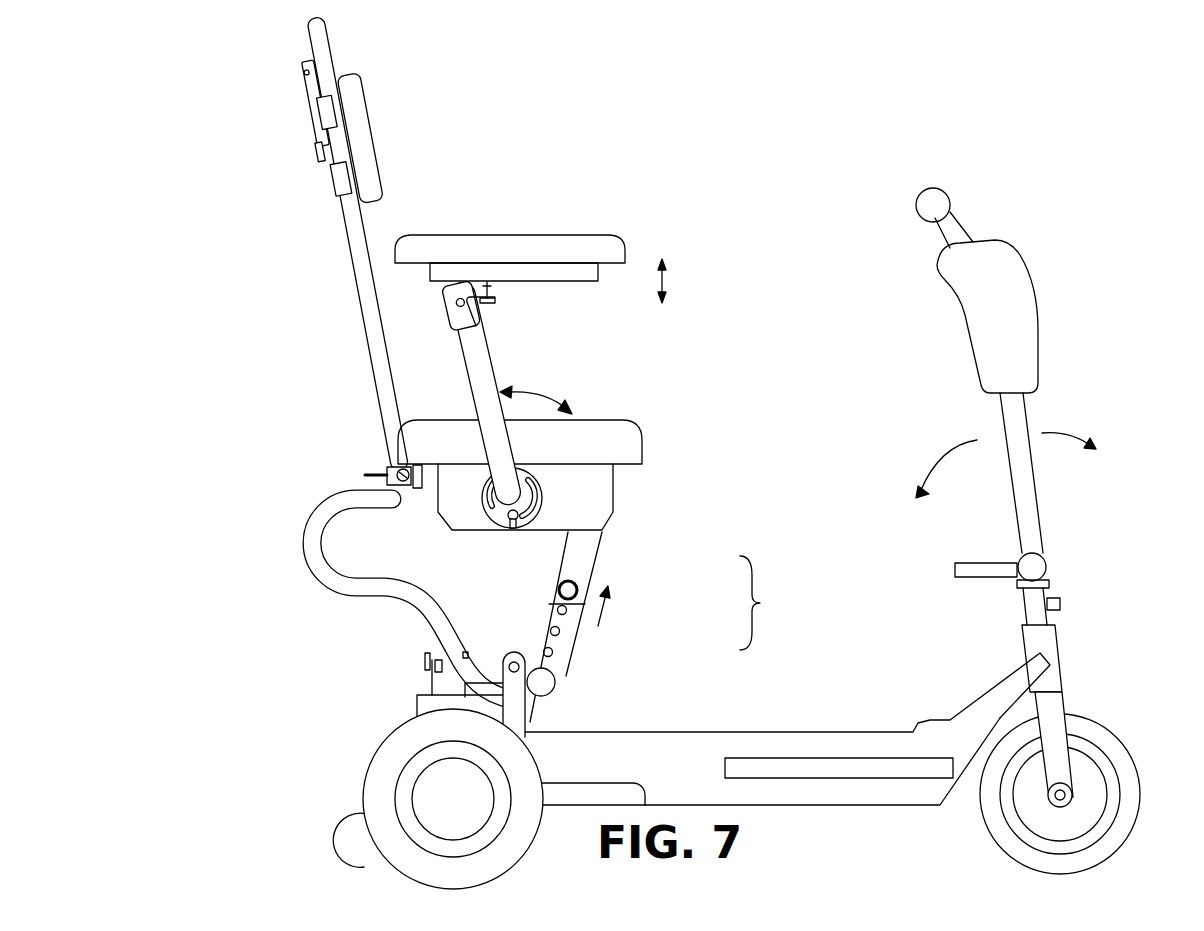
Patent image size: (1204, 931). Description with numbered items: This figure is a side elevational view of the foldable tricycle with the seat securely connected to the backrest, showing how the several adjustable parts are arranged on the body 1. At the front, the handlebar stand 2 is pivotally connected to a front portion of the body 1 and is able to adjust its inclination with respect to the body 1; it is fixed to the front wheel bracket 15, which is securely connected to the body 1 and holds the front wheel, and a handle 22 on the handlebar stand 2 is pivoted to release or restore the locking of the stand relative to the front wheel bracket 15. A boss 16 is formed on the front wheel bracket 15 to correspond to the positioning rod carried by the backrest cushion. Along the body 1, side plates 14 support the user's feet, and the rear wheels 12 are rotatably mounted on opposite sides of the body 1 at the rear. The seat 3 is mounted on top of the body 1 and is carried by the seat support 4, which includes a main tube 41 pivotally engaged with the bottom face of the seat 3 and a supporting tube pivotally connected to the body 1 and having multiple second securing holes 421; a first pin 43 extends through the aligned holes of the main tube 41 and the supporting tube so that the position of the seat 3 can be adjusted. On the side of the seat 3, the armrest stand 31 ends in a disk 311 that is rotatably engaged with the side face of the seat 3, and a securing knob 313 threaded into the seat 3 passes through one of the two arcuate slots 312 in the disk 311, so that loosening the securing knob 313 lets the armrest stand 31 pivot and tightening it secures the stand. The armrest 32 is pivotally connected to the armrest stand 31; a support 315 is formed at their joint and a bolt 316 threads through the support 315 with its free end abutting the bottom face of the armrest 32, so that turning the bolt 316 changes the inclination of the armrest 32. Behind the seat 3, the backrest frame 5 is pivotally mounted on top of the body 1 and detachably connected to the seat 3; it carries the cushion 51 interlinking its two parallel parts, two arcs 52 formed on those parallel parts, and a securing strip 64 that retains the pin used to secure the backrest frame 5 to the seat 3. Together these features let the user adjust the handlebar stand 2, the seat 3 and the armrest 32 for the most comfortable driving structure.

The body 1 is at (838, 742).
The rear wheels 12 is at (428, 788).
The side plates 14 is at (890, 768).
The front wheel bracket 15 is at (1063, 684).
The boss 16 is at (1060, 603).
The handlebar stand 2 is at (1027, 506).
The handle 22 is at (988, 568).
The seat 3 is at (607, 437).
The armrest stand 31 is at (477, 386).
The disk 311 is at (527, 482).
The arcuate slots 312 is at (487, 497).
The securing knob 313 is at (523, 522).
The support 315 is at (497, 297).
The bolt 316 is at (496, 287).
The armrest 32 is at (566, 242).
The seat support 4 is at (650, 627).
The main tube 41 is at (582, 563).
The first pin 43 is at (578, 588).
The second securing holes 421 is at (560, 633).
The backrest frame 5 is at (401, 237).
The cushion 51 is at (355, 116).
The arcs 52 is at (308, 557).
The securing strip 64 is at (390, 466).